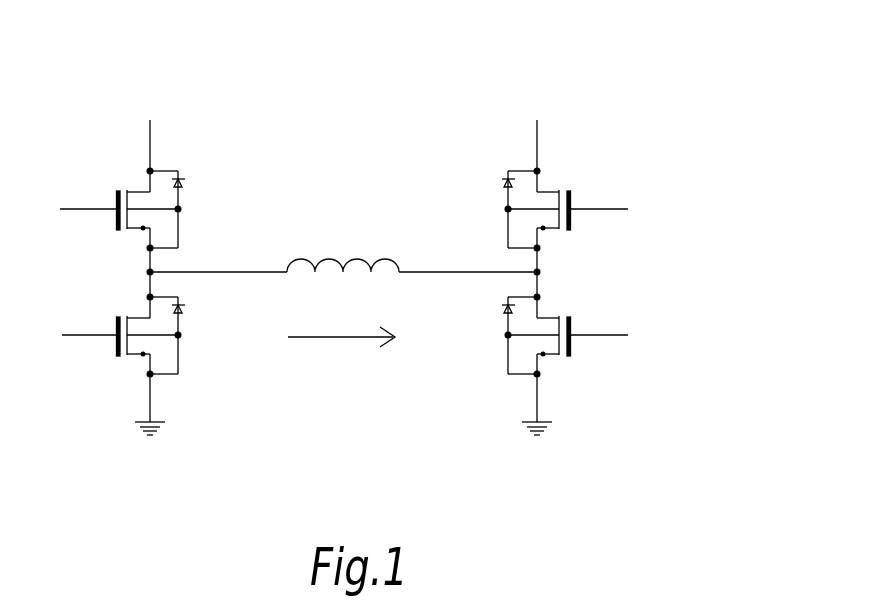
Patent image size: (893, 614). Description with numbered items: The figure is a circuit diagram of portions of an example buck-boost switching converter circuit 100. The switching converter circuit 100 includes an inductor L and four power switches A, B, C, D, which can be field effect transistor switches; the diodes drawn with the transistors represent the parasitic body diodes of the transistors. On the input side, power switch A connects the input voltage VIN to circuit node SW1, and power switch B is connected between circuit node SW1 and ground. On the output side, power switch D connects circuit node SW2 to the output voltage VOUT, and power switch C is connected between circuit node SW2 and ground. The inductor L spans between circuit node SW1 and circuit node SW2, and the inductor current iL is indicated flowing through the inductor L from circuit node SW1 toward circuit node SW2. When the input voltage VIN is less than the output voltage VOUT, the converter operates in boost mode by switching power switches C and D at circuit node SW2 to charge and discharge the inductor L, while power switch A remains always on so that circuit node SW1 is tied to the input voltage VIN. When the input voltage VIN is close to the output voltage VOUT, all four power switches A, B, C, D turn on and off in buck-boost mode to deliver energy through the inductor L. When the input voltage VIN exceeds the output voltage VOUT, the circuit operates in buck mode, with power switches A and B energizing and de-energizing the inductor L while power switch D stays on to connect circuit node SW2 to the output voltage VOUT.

The switching converter circuit 100 is at (678, 43).
The power switch A is at (122, 210).
The power switch B is at (123, 336).
The power switch C is at (565, 336).
The power switch D is at (565, 210).
The circuit node SW1 is at (188, 272).
The circuit node SW2 is at (493, 272).
The inductor L is at (343, 243).
The inductor current iL is at (341, 319).
The input voltage VIN is at (147, 119).
The output voltage VOUT is at (540, 119).